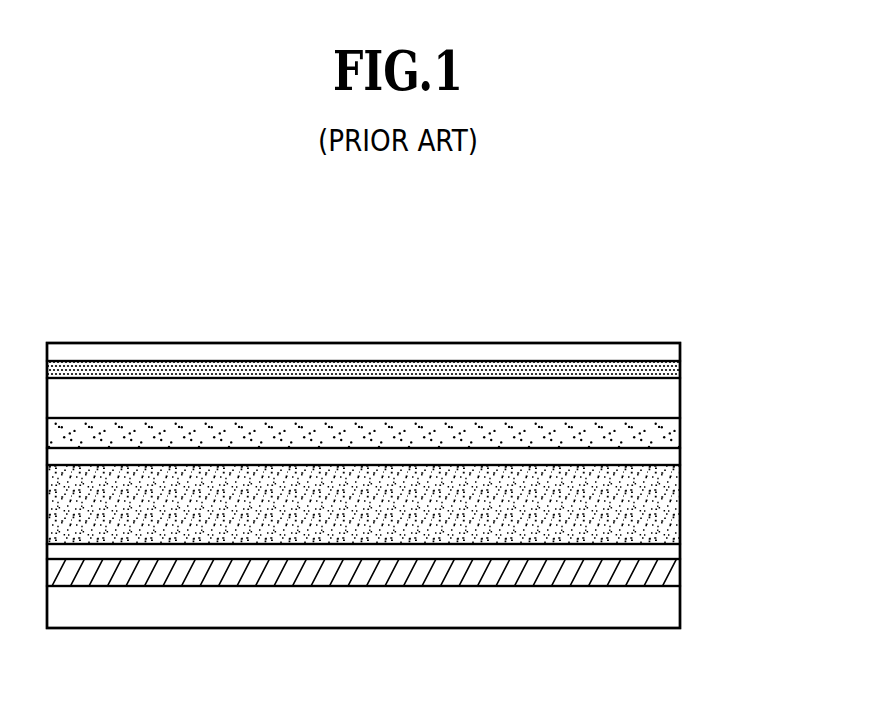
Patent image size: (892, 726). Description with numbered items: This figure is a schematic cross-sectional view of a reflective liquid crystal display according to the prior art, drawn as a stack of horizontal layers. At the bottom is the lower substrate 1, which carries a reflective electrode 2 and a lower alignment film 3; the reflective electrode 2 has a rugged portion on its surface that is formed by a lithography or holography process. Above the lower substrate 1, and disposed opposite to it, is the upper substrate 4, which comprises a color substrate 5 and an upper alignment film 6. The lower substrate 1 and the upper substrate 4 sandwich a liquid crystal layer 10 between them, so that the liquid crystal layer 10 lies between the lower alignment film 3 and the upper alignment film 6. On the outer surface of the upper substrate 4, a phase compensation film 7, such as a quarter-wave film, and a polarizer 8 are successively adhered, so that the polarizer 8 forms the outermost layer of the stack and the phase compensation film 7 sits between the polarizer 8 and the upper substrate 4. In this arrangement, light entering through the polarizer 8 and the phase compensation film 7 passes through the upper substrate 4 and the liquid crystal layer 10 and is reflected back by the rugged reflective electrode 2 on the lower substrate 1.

The lower substrate 1 is at (668, 608).
The reflective electrode 2 is at (670, 570).
The lower alignment film 3 is at (668, 552).
The upper substrate 4 is at (665, 401).
The color substrate 5 is at (672, 435).
The upper alignment film 6 is at (668, 457).
The phase compensation film 7 is at (668, 370).
The polarizer 8 is at (670, 353).
The liquid crystal layer 10 is at (670, 507).